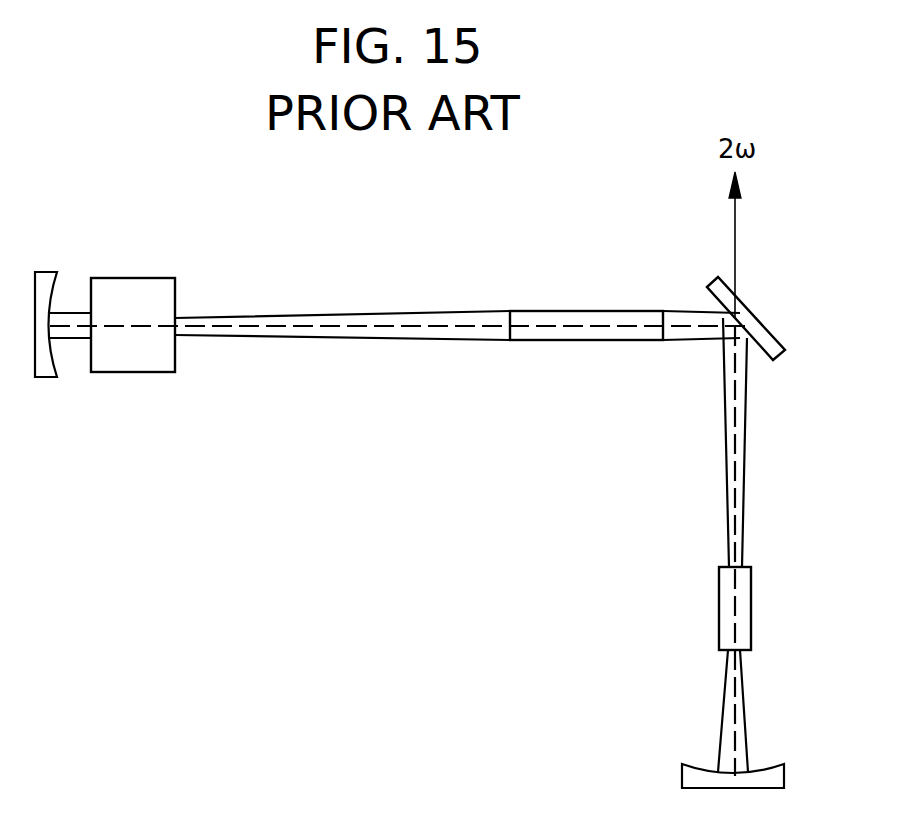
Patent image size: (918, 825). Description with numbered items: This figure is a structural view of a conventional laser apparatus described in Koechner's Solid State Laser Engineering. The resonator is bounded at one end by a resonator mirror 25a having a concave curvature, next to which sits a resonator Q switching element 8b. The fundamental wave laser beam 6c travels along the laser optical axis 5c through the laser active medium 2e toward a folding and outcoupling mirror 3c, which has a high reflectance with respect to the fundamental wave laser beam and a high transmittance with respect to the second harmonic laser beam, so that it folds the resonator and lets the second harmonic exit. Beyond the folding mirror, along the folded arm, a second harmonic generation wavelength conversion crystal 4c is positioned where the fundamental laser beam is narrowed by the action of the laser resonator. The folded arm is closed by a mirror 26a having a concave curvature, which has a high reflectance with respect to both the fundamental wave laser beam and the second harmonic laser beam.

The resonator mirror 25a is at (48, 272).
The resonator Q switching element 8b is at (133, 278).
The fundamental wave beam 6c is at (362, 318).
The laser optical axis 5c is at (460, 318).
The laser active medium 2e is at (558, 340).
The folding and outcoupling mirror 3c is at (763, 330).
The second harmonic generation wavelength conversion crystal 4c is at (752, 612).
The mirror 26a is at (775, 765).